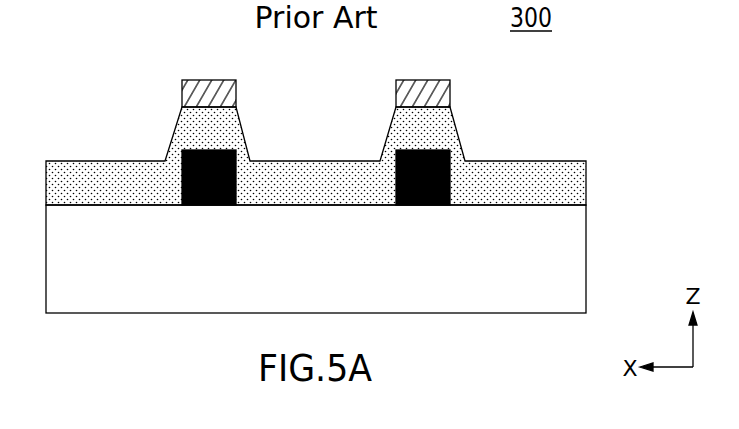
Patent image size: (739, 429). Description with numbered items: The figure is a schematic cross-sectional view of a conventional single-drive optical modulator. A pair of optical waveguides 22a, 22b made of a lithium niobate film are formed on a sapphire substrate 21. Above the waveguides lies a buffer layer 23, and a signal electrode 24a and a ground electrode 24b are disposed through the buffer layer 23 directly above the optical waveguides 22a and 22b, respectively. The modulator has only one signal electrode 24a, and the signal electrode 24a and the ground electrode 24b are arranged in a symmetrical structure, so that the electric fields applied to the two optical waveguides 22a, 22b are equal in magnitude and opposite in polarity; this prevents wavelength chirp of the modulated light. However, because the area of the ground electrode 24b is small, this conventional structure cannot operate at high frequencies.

The sapphire substrate 21 is at (586, 258).
The buffer layer 23 is at (586, 186).
The optical waveguide 22a is at (235, 178).
The optical waveguide 22b is at (452, 178).
The signal electrode 24a is at (236, 95).
The ground electrode 24b is at (450, 95).